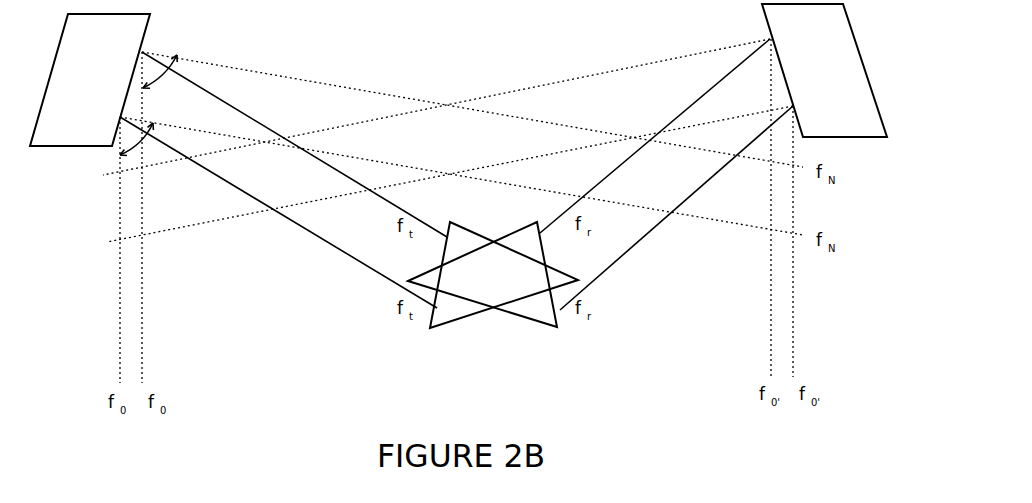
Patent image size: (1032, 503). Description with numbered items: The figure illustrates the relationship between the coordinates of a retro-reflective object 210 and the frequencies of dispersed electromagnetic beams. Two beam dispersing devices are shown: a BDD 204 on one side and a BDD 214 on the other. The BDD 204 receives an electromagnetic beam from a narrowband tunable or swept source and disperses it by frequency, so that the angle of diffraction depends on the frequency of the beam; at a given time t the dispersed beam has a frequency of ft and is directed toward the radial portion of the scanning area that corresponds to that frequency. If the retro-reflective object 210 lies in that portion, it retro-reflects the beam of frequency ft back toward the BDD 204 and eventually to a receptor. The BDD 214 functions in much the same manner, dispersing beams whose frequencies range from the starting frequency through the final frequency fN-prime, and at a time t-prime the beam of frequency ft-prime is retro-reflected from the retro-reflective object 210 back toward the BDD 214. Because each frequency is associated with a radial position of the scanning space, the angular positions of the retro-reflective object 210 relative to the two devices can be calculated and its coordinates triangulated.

The BDD 204 is at (73, 103).
The BDD 214 is at (808, 93).
The retro-reflective object 210 is at (450, 323).